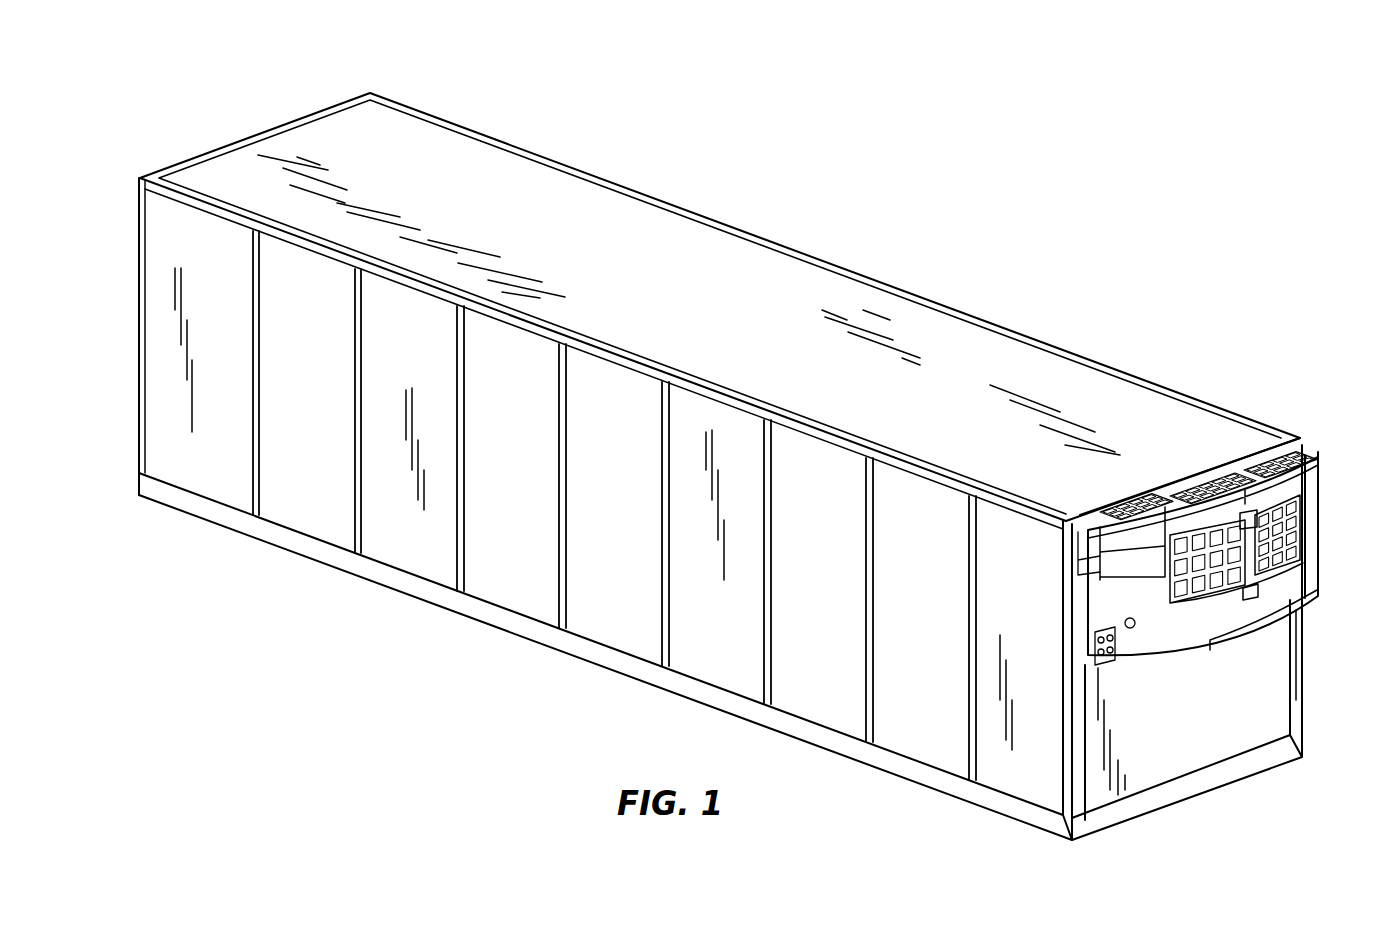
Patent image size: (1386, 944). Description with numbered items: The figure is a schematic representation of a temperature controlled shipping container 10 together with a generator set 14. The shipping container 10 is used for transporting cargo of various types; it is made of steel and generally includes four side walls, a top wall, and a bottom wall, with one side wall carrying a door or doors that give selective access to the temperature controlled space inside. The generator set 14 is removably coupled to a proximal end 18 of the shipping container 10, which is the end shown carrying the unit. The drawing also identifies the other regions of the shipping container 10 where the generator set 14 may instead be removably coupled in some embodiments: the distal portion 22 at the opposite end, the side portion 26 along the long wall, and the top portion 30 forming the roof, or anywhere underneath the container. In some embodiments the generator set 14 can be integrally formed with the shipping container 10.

The shipping container 10 is at (729, 445).
The generator set 14 is at (1330, 501).
The proximal end 18 is at (1242, 705).
The distal portion 22 is at (138, 337).
The side portion 26 is at (520, 590).
The top portion 30 is at (688, 247).